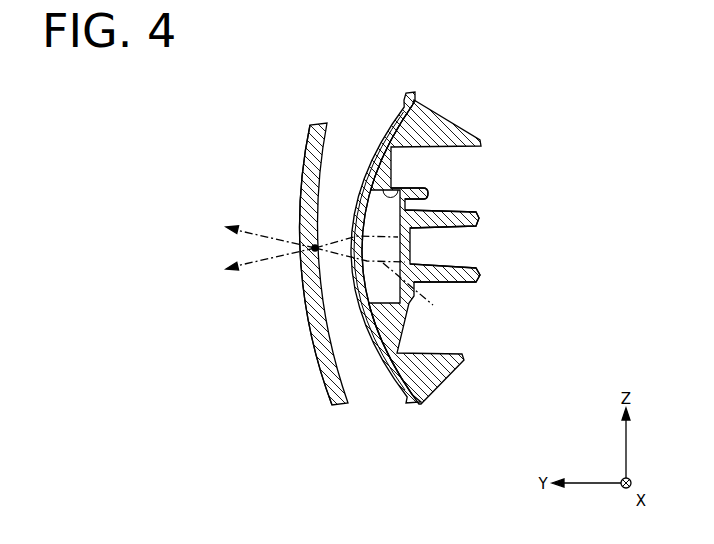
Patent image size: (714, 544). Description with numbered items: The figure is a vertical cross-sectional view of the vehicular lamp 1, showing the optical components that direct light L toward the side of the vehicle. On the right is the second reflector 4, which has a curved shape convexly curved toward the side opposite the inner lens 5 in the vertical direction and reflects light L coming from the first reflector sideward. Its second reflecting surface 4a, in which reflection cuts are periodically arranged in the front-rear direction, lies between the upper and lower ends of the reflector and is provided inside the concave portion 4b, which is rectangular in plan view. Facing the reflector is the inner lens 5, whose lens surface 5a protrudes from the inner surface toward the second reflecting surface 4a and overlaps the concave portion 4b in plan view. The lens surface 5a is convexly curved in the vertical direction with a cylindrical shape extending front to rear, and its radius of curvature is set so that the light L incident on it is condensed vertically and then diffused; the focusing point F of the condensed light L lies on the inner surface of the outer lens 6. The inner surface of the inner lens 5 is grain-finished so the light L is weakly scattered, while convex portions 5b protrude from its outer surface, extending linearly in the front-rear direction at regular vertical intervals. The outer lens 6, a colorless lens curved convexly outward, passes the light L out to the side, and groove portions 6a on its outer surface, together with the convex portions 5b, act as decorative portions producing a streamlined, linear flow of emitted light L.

The vehicular lamp 1 is at (253, 47).
The second reflector 4 is at (448, 125).
The second reflecting surface 4a is at (412, 208).
The concave portion 4b is at (404, 190).
The inner lens 5 is at (409, 400).
The lens surface 5a is at (373, 195).
The convex portions 5b is at (381, 366).
The outer lens 6 is at (345, 404).
The groove portions 6a is at (312, 360).
The focusing point F is at (316, 246).
The light L is at (271, 262).